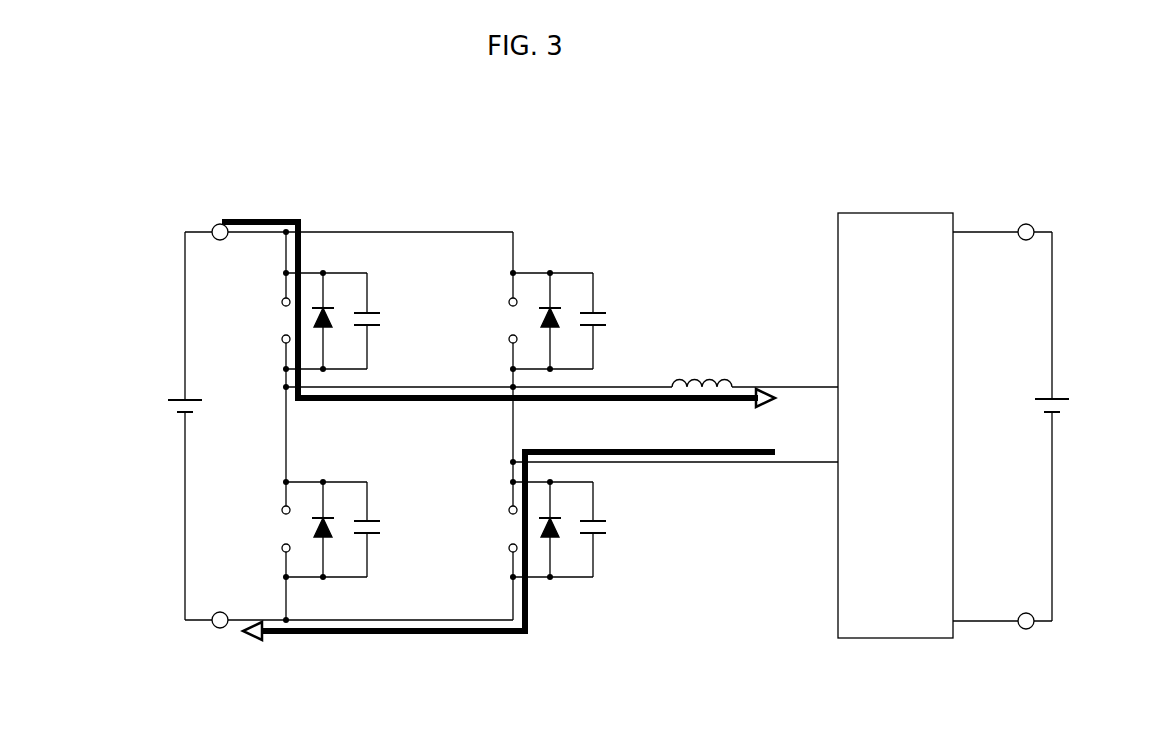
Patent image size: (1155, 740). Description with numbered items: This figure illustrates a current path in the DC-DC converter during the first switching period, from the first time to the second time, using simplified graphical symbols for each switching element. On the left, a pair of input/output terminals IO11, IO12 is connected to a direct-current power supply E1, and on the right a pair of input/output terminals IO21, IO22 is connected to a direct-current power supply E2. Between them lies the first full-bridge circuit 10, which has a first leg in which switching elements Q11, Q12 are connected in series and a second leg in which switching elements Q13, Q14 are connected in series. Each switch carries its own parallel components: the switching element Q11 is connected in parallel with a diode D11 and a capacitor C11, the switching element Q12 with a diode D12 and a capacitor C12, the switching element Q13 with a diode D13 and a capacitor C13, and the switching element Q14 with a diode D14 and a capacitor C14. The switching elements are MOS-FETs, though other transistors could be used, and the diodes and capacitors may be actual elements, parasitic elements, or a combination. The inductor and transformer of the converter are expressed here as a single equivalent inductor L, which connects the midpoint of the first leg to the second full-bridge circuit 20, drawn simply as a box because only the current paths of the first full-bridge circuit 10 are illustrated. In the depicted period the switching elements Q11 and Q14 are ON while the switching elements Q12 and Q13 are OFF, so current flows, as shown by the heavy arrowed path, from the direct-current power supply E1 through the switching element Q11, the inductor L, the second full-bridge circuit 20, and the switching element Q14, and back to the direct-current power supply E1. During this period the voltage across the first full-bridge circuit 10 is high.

The first full-bridge circuit 10 is at (410, 189).
The second full-bridge circuit 20 is at (905, 213).
The input/output terminal IO11 is at (217, 215).
The input/output terminal IO12 is at (217, 637).
The input/output terminal IO21 is at (1024, 217).
The input/output terminal IO22 is at (1024, 639).
The direct-current power supply E1 is at (175, 392).
The direct-current power supply E2 is at (1062, 392).
The switching element Q11 is at (256, 318).
The switching element Q12 is at (256, 529).
The switching element Q13 is at (486, 320).
The switching element Q14 is at (486, 535).
The diode D11 is at (327, 306).
The diode D12 is at (326, 511).
The diode D13 is at (553, 308).
The diode D14 is at (554, 549).
The capacitor C11 is at (387, 321).
The capacitor C12 is at (390, 529).
The capacitor C13 is at (610, 321).
The capacitor C14 is at (610, 529).
The equivalent inductor L is at (702, 369).